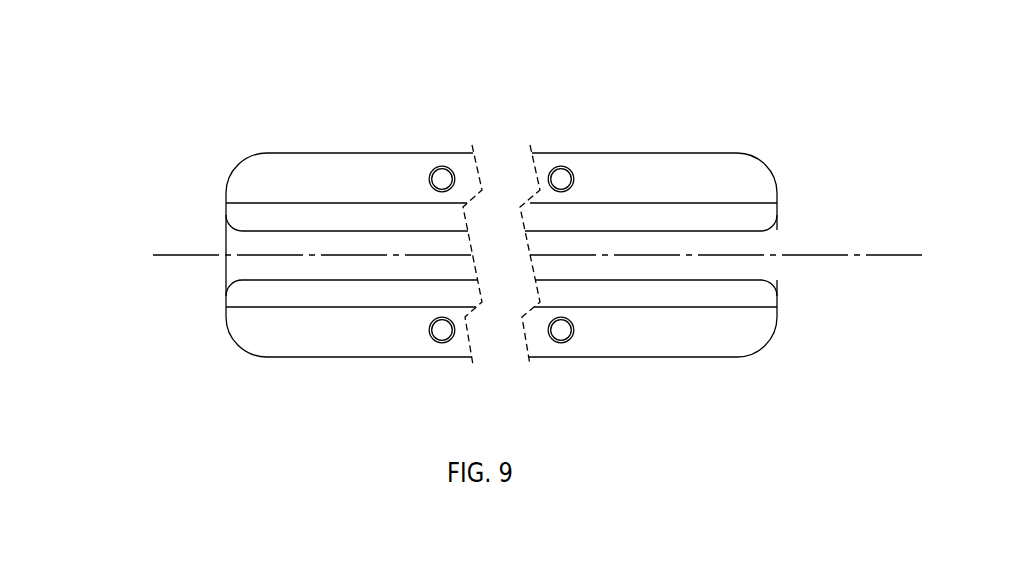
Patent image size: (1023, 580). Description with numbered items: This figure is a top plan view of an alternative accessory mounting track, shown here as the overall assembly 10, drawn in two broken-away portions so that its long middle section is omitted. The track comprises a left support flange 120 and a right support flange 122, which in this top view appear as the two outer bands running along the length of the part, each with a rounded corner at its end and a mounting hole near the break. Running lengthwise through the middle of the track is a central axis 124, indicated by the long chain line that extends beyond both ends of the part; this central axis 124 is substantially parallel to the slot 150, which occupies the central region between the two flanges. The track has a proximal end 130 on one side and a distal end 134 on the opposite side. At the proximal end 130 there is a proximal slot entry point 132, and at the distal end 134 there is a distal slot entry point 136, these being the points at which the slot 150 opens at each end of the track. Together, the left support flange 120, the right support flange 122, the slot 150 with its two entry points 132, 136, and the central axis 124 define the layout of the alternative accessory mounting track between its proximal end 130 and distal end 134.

The grip assembly 10 is at (752, 118).
The left support flange 120 is at (267, 173).
The right support flange 122 is at (267, 338).
The central axis 124 is at (835, 253).
The proximal end 130 is at (800, 292).
The proximal slot entry point 132 is at (765, 265).
The distal end 134 is at (197, 210).
The distal slot entry point 136 is at (238, 239).
The slot 150 is at (273, 263).